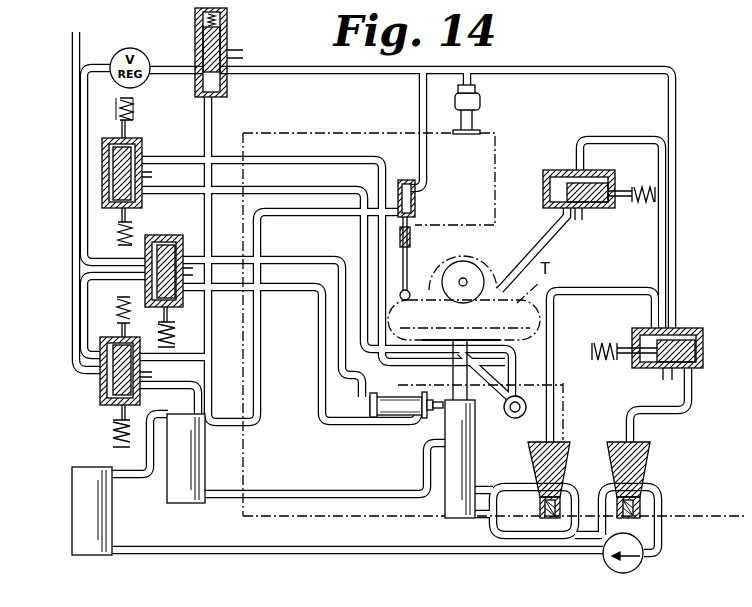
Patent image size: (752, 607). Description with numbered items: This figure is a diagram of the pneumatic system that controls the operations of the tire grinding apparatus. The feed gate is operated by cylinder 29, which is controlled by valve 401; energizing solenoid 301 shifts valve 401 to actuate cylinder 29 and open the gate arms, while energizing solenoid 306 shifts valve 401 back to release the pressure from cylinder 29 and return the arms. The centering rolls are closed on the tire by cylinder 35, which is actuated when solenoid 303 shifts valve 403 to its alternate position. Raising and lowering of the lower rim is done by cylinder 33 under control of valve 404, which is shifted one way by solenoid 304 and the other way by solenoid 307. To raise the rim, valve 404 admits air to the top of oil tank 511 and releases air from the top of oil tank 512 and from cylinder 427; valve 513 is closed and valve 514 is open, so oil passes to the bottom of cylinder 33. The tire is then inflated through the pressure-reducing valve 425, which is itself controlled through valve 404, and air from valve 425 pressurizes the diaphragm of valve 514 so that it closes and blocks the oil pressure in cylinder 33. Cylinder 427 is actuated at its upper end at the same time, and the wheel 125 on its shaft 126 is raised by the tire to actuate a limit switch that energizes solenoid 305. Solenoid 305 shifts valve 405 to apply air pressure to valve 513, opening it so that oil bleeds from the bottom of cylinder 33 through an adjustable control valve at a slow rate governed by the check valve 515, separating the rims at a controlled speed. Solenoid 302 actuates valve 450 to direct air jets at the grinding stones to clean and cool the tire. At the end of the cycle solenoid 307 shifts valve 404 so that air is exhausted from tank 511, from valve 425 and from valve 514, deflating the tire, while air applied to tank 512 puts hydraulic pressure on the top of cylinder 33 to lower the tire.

The pressure-reducing valve 425 is at (229, 27).
The solenoid 301 is at (134, 110).
The valve 401 is at (140, 150).
The solenoid 306 is at (125, 233).
The valve 403 is at (160, 235).
The solenoid 303 is at (176, 330).
The solenoid 304 is at (117, 312).
The valve 404 is at (102, 394).
The solenoid 307 is at (113, 433).
The oil tank 511 is at (78, 508).
The oil tank 512 is at (175, 483).
The cylinder 427 is at (408, 180).
The shaft 126 is at (460, 264).
The wheel 125 is at (407, 301).
The valve 450 is at (562, 170).
The solenoid 302 is at (645, 203).
The valve 405 is at (690, 328).
The solenoid 305 is at (602, 343).
The cylinder 35 is at (402, 418).
The cylinder 29 is at (520, 418).
The cylinder 33 is at (466, 472).
The valve 514 is at (568, 448).
The valve 513 is at (650, 448).
The check valve 515 is at (638, 568).